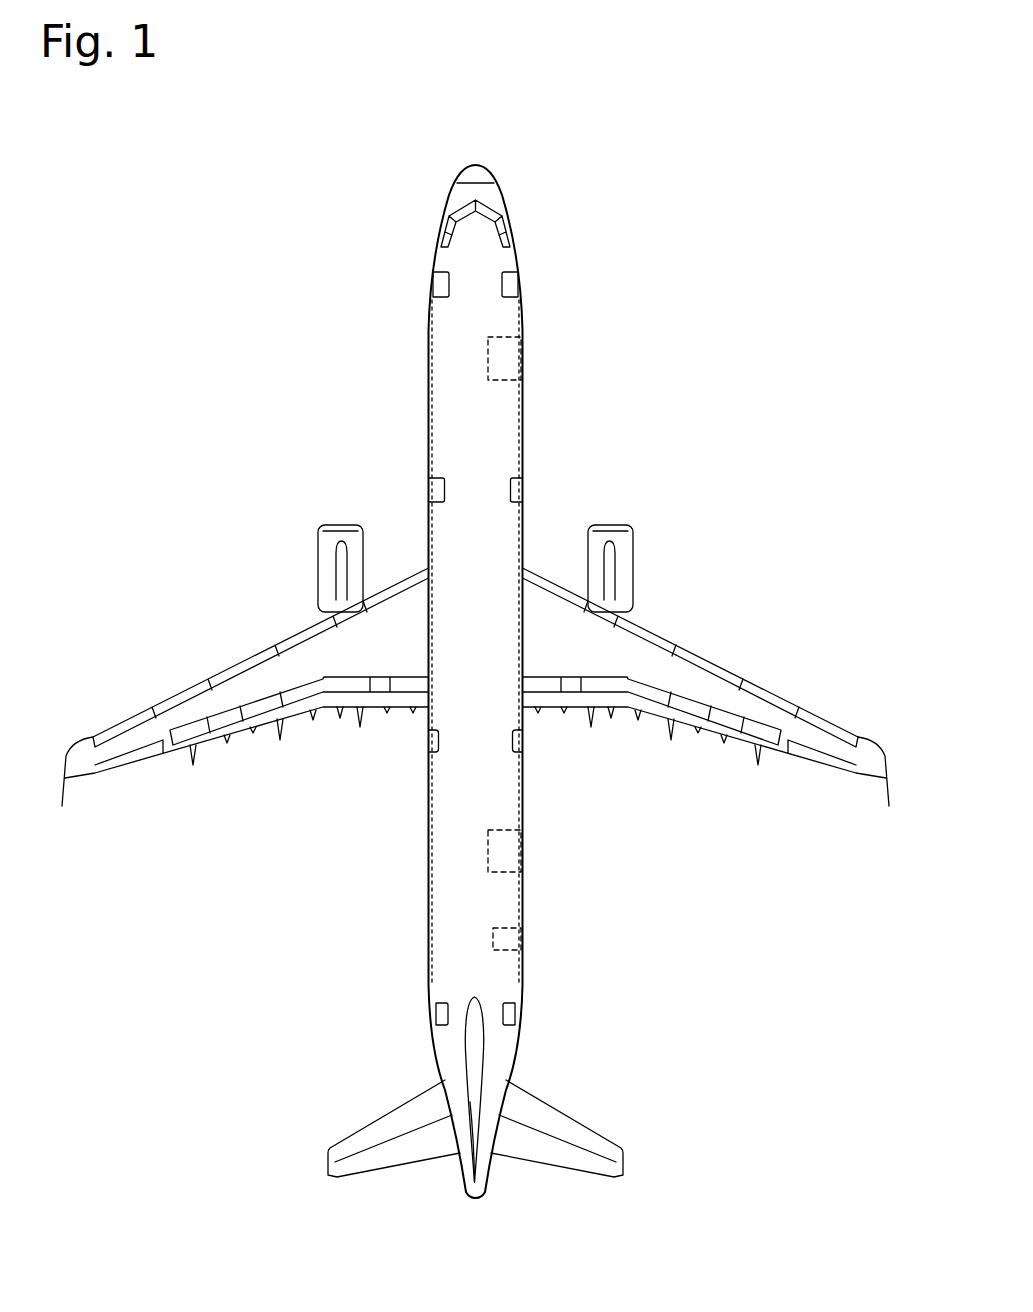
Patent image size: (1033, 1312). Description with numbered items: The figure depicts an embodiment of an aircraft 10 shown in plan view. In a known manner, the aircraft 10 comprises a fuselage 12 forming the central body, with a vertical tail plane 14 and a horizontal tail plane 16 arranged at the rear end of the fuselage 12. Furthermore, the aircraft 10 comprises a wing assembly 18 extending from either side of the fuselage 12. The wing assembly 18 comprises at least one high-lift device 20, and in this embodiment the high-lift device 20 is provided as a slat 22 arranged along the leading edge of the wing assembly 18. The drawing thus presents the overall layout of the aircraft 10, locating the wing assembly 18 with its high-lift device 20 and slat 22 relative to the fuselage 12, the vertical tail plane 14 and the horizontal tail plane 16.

The aircraft 10 is at (244, 240).
The fuselage 12 is at (406, 407).
The vertical tail plane 14 is at (471, 1066).
The horizontal tail plane 16 is at (568, 1131).
The wing assembly 18 is at (229, 640).
The high-lift device 20 is at (668, 646).
The slat 22 is at (695, 662).